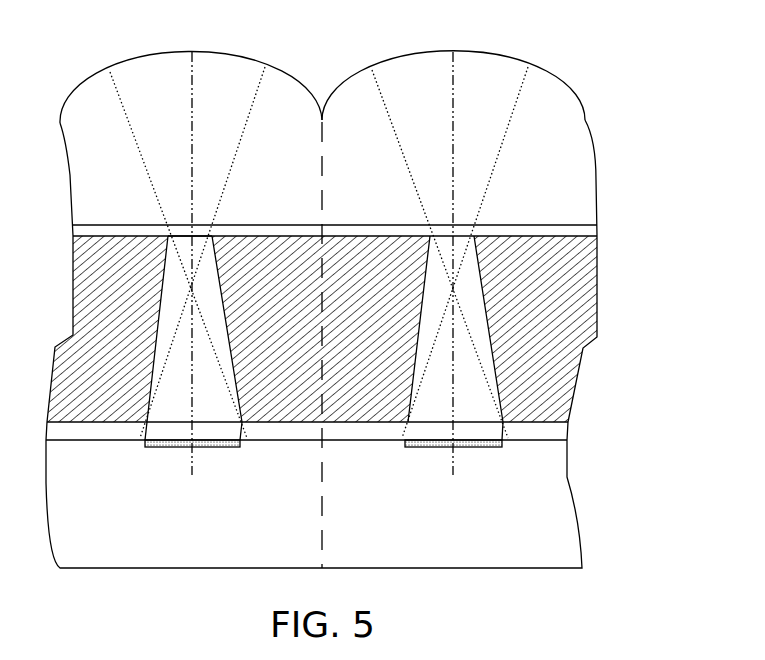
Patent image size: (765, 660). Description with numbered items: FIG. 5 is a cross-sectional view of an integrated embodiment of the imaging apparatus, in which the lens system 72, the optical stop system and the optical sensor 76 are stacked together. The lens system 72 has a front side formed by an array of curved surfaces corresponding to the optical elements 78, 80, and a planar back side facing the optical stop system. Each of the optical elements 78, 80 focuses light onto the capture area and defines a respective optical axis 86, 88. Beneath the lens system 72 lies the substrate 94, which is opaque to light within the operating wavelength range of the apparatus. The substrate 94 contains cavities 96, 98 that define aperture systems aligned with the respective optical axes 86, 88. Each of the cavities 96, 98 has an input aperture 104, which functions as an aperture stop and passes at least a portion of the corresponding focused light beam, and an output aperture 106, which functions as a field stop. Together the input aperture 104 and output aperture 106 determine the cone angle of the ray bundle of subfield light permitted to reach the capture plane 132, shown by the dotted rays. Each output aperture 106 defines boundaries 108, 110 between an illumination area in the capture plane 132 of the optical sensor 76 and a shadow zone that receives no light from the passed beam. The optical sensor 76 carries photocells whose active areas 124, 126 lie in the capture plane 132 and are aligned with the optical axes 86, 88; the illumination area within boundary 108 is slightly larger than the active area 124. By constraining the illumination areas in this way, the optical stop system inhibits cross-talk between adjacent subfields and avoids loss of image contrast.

The lens system 72 is at (583, 125).
The optical sensor 76 is at (568, 500).
The optical element 78 is at (213, 52).
The optical element 80 is at (475, 52).
The optical axis 86 is at (195, 91).
The optical axis 88 is at (455, 92).
The substrate 94 is at (597, 287).
The cavity 96 is at (220, 333).
The cavity 98 is at (482, 333).
The input aperture 104 is at (180, 233).
The output aperture 106 is at (175, 428).
The boundary 108 is at (240, 443).
The boundary 110 is at (502, 442).
The active area 124 is at (178, 448).
The active area 126 is at (438, 450).
The capture plane 132 is at (575, 433).